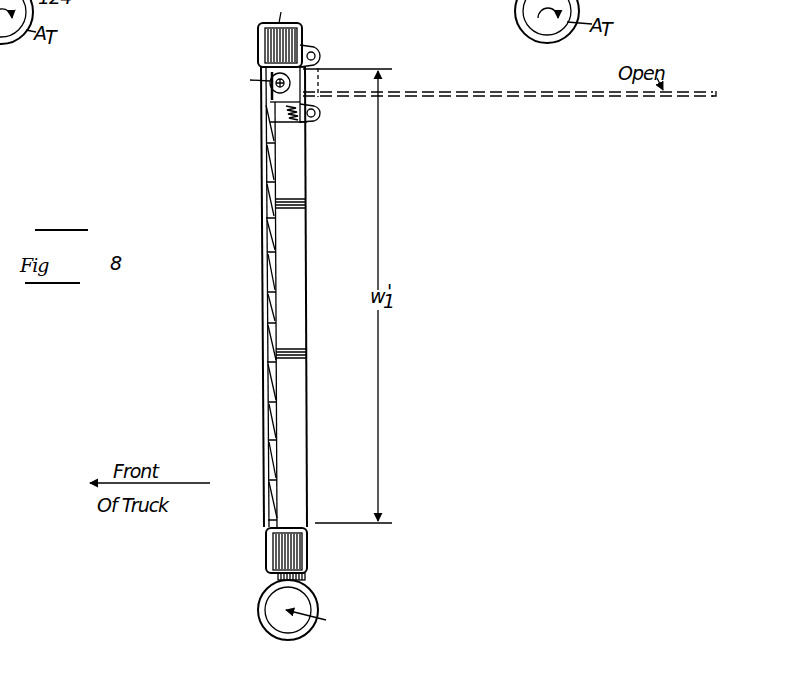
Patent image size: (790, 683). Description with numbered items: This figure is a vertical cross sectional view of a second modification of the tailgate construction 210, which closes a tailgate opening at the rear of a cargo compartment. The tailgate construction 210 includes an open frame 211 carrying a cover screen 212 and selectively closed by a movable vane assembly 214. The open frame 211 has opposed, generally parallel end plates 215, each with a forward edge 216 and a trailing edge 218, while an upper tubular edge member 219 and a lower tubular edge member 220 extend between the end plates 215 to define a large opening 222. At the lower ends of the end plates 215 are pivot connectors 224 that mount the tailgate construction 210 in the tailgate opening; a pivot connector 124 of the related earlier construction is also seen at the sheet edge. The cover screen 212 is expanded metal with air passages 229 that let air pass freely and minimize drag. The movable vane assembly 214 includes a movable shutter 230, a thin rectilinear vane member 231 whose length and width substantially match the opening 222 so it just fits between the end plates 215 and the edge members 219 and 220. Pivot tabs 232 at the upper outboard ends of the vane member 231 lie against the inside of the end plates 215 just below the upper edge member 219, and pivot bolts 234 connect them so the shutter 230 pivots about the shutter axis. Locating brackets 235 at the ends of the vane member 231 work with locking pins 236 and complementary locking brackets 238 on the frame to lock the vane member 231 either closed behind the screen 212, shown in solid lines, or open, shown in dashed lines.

The pivot ring 124 is at (578, 4).
The tailgate construction 210 is at (334, 32).
The open frame 211 is at (257, 38).
The cover screen 212 is at (260, 227).
The movable vane assembly 214 is at (276, 188).
The end plates 215 is at (303, 232).
The forward edge 216 is at (313, 290).
The trailing edge 218 is at (262, 300).
The upper tubular edge member 219 is at (290, 0).
The lower tubular edge member 220 is at (306, 544).
The large opening 222 is at (296, 380).
The pivot connectors 224 is at (314, 600).
The air passages 229 is at (267, 190).
The movable shutter 230 is at (274, 275).
The vane member 231 is at (270, 331).
The pivot tabs 232 is at (290, 78).
The pivot bolts 234 is at (271, 94).
The locating brackets 235 is at (284, 128).
The locking pins 236 is at (317, 111).
The locking brackets 238 is at (306, 44).